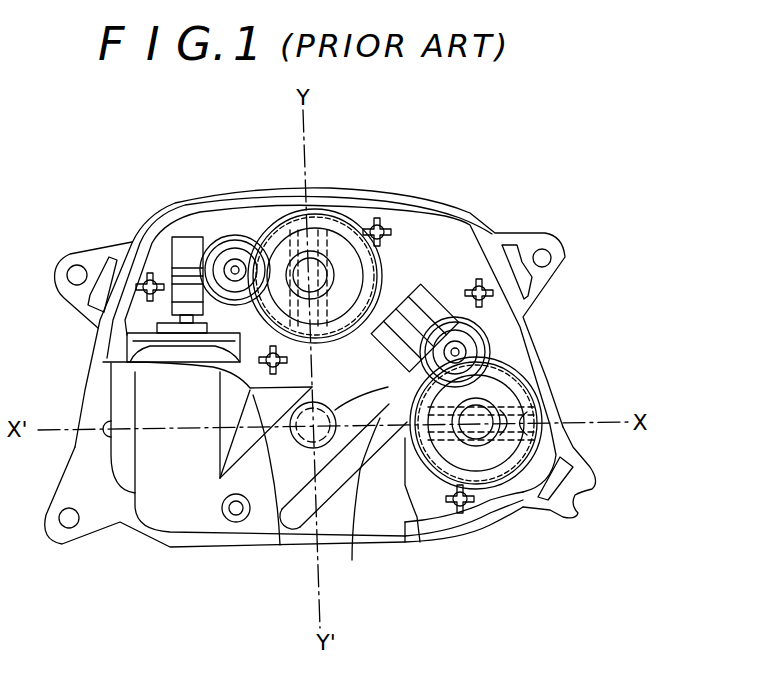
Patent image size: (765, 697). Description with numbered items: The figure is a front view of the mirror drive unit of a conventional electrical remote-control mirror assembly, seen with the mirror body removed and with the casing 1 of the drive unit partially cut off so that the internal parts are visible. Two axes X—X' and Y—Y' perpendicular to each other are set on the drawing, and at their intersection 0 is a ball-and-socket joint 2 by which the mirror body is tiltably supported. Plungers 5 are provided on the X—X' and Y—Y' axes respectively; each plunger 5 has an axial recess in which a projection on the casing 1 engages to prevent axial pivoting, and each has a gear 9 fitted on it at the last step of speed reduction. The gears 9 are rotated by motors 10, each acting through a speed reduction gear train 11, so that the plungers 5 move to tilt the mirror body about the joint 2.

The casing 1 is at (471, 202).
The ball-and-socket joint 2 is at (250, 527).
The intersection 0 is at (301, 443).
The plunger 5 is at (334, 272).
The gear 9 is at (370, 242).
The motor 10 is at (103, 362).
The speed reduction gear train 11 is at (228, 230).